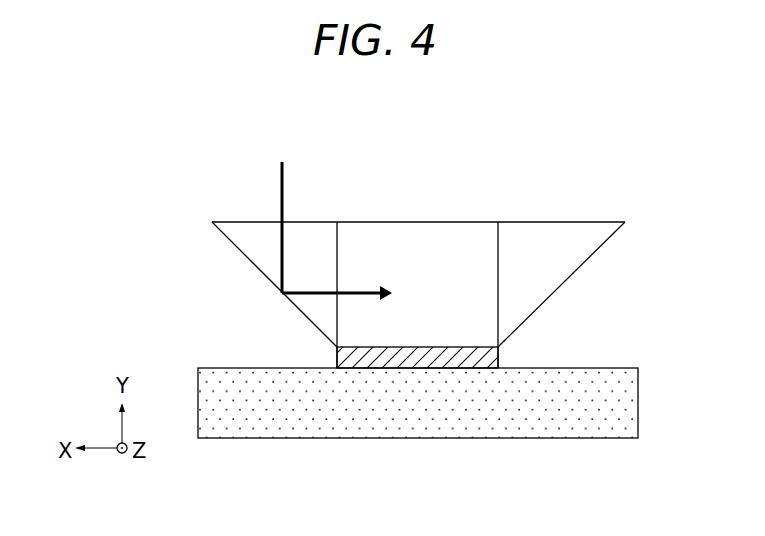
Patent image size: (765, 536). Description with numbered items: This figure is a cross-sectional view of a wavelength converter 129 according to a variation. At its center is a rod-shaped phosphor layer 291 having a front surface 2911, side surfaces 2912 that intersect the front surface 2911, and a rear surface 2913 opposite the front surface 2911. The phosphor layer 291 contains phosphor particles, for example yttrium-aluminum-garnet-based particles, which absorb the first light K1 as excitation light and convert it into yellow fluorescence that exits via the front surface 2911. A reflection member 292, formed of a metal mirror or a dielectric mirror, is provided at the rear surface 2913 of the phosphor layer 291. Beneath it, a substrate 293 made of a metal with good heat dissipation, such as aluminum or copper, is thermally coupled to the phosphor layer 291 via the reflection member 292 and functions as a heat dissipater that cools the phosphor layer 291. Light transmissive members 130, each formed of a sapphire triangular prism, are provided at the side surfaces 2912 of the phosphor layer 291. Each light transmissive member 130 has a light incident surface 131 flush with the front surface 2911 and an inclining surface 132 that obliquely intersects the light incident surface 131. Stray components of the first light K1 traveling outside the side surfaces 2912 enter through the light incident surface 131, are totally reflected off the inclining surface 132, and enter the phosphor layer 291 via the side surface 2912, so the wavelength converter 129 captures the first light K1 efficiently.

The wavelength converter 129 is at (402, 306).
The light transmissive member 130 is at (400, 255).
The light incident surface 131 is at (653, 202).
The inclining surface 132 is at (253, 263).
The phosphor layer 291 is at (516, 329).
The front surface 2911 is at (472, 222).
The side surface 2912 is at (498, 262).
The rear surface 2913 is at (452, 348).
The reflection member 292 is at (492, 362).
The substrate 293 is at (597, 425).
The first light K1 is at (280, 180).